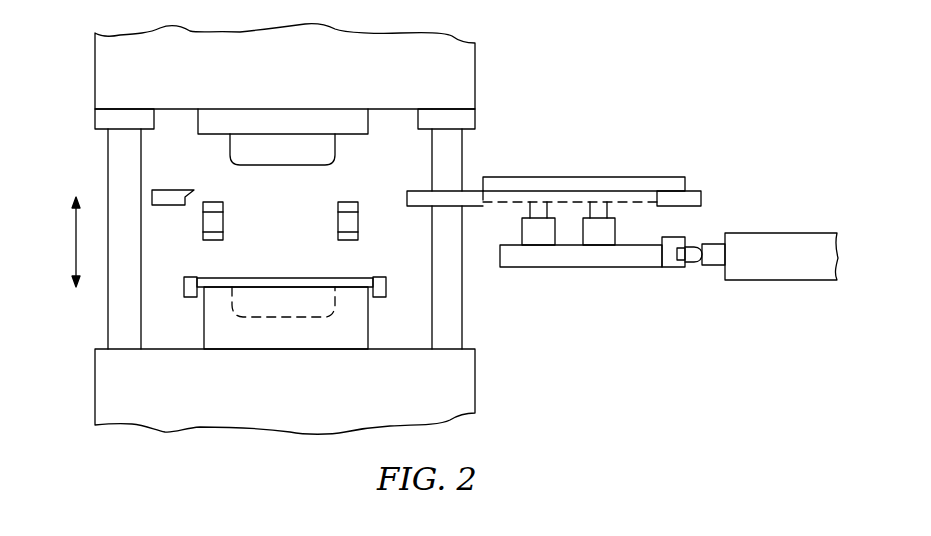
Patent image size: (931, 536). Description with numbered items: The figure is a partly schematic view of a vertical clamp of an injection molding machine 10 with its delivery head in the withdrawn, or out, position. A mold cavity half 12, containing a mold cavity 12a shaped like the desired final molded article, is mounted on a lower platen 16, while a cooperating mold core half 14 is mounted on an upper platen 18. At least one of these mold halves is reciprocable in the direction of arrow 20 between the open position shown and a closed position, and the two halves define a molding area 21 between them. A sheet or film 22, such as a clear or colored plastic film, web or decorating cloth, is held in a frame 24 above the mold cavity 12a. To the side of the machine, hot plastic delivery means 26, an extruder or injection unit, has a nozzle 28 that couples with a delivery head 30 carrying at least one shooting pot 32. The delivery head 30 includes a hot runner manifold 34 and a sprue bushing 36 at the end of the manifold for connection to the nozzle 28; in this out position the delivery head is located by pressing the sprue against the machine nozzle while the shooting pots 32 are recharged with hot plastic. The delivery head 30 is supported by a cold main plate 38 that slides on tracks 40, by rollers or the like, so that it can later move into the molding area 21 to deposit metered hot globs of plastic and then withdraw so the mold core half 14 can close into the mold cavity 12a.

The injection molding machine 10 is at (538, 92).
The mold cavity half 12 is at (352, 332).
The mold cavity 12a is at (300, 308).
The mold core half 14 is at (322, 154).
The platen 16 is at (250, 405).
The platen 18 is at (211, 83).
The arrow 20 is at (74, 249).
The molding area 21 is at (288, 234).
The sheet or film 22 is at (218, 278).
The frame 24 is at (184, 293).
The hot plastic delivery means 26 is at (772, 233).
The nozzle 28 is at (692, 262).
The delivery head 30 is at (565, 252).
The shooting pot 32 is at (600, 237).
The hot runner manifold 34 is at (517, 257).
The sprue bushing 36 is at (680, 238).
The cold main plate 38 is at (585, 182).
The tracks 40 is at (693, 193).